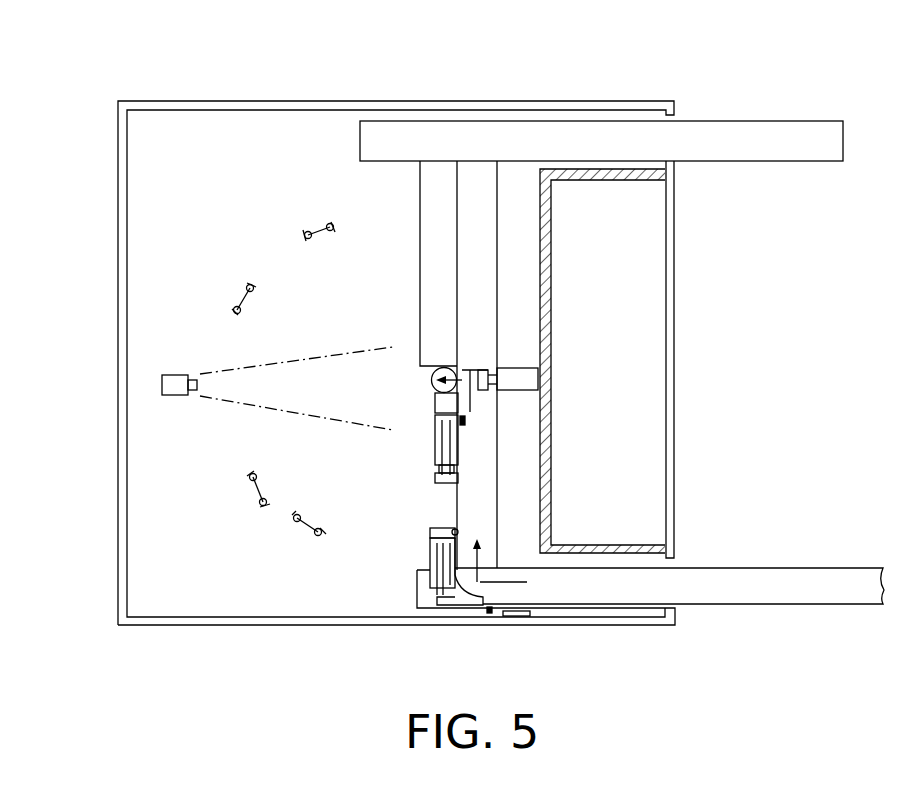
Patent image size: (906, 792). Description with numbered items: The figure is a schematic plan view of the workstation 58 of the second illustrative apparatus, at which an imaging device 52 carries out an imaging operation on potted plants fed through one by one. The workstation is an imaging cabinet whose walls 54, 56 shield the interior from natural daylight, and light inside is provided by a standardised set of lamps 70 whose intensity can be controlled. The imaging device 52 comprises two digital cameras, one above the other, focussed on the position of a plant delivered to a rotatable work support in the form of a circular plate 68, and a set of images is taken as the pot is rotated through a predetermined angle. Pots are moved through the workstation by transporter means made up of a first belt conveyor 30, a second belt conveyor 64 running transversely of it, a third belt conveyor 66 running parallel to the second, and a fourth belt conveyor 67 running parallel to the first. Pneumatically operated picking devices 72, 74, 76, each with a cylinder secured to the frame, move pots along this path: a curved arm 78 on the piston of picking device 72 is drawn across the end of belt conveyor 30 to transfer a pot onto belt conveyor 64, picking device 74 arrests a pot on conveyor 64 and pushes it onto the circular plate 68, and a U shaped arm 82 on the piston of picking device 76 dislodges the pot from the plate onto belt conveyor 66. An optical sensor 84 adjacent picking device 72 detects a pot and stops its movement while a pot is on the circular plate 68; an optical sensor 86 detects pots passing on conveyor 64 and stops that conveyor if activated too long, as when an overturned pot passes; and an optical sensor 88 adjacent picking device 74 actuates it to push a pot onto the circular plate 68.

The belt conveyor 30 is at (702, 590).
The imaging device 52 is at (173, 375).
The wall 54 is at (362, 100).
The wall 56 is at (552, 258).
The workstation 58 is at (88, 226).
The second belt conveyor 64 is at (483, 488).
The third belt conveyor 66 is at (427, 288).
The fourth belt conveyor 67 is at (742, 133).
The circular plate 68 is at (431, 380).
The lamps 70 is at (306, 230).
The picking device 72 is at (430, 555).
The picking device 74 is at (520, 368).
The picking device 76 is at (458, 447).
The curved arm 78 is at (470, 607).
The U shaped arm 82 is at (435, 400).
The optical sensor 84 is at (497, 615).
The optical sensor 86 is at (452, 528).
The optical sensor 88 is at (466, 420).